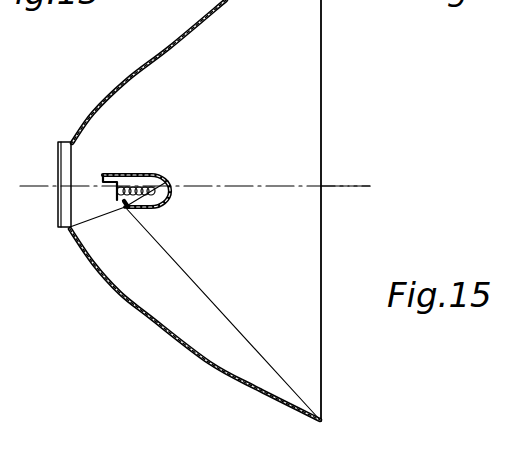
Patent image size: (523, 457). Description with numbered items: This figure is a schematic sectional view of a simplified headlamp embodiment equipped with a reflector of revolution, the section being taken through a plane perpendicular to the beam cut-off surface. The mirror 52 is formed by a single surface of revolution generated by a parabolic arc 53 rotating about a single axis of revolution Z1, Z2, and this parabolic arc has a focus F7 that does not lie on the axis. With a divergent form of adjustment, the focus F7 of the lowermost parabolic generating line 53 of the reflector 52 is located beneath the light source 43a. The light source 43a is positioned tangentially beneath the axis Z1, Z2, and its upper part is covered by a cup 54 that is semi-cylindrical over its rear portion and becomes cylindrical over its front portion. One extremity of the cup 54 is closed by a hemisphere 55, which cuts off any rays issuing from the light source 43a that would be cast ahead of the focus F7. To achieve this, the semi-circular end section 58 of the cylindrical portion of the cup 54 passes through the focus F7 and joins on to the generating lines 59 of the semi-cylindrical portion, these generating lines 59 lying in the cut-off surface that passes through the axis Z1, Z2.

The light source 43a is at (150, 172).
The mirror 52 is at (162, 309).
The parabolic arc 53 is at (211, 364).
The cup 54 is at (122, 174).
The hemisphere 55 is at (173, 201).
The semi-circular end section 58 is at (120, 192).
The generating lines 59 is at (103, 185).
The focus F7 is at (125, 208).
The axis of revolution Z1 is at (42, 188).
The axis of revolution Z2 is at (400, 188).